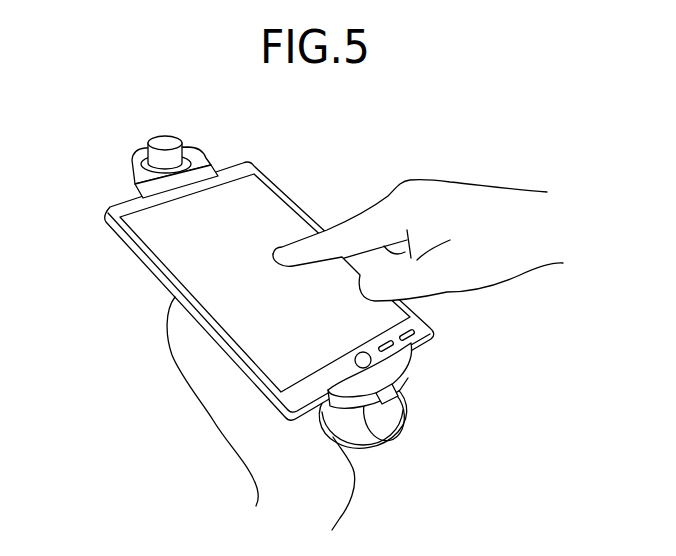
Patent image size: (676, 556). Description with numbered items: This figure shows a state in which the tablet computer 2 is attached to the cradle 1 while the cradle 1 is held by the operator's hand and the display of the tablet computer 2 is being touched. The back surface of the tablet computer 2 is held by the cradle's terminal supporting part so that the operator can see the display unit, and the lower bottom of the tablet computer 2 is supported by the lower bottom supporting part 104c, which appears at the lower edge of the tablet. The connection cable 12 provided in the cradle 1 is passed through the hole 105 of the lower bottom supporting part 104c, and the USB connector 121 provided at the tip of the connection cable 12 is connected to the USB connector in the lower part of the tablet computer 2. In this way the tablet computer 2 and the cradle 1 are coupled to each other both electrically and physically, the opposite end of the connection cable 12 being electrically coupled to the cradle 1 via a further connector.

The cradle 1 is at (132, 190).
The tablet computer 2 is at (285, 218).
The lower bottom supporting part 104c is at (413, 364).
The USB connector 121 is at (402, 378).
The connection cable 12 is at (407, 433).
The hole 105 is at (384, 452).